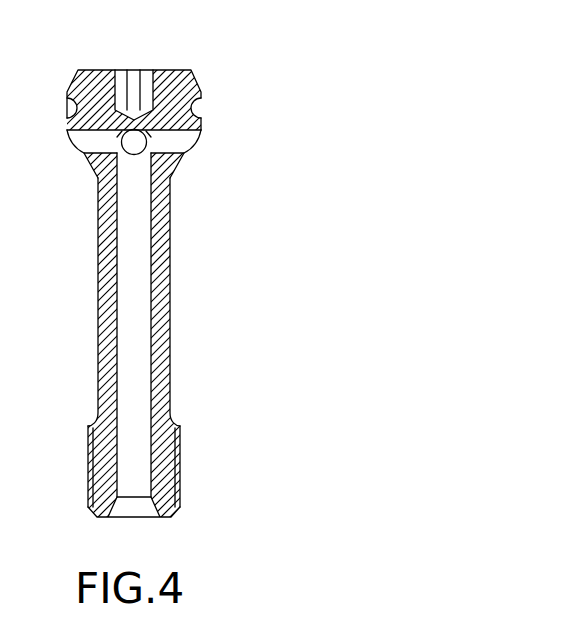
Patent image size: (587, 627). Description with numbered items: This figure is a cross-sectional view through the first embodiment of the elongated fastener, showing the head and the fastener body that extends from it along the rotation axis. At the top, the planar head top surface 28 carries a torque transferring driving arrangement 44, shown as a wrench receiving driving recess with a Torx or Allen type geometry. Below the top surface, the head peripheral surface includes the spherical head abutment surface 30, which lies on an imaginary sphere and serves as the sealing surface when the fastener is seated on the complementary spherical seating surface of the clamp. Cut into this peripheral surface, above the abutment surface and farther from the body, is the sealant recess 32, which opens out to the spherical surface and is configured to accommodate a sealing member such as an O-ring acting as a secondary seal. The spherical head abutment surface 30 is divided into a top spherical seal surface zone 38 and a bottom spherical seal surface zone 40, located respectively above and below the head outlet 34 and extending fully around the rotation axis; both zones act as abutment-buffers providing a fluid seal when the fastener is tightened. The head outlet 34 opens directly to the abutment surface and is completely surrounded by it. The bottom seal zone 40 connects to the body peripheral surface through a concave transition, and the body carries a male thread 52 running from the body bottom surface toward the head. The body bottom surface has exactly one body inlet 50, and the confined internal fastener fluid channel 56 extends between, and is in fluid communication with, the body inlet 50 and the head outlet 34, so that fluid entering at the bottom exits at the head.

The head top surface 28 is at (175, 70).
The spherical head abutment surface 30 is at (188, 160).
The sealant recess 32 is at (197, 110).
The head outlet 34 is at (180, 142).
The top spherical seal surface zone 38 is at (67, 123).
The bottom spherical seal surface zone 40 is at (83, 155).
The driving arrangement 44 is at (122, 85).
The body inlet 50 is at (132, 507).
The male thread 52 is at (177, 452).
The fastener fluid channel 56 is at (132, 322).